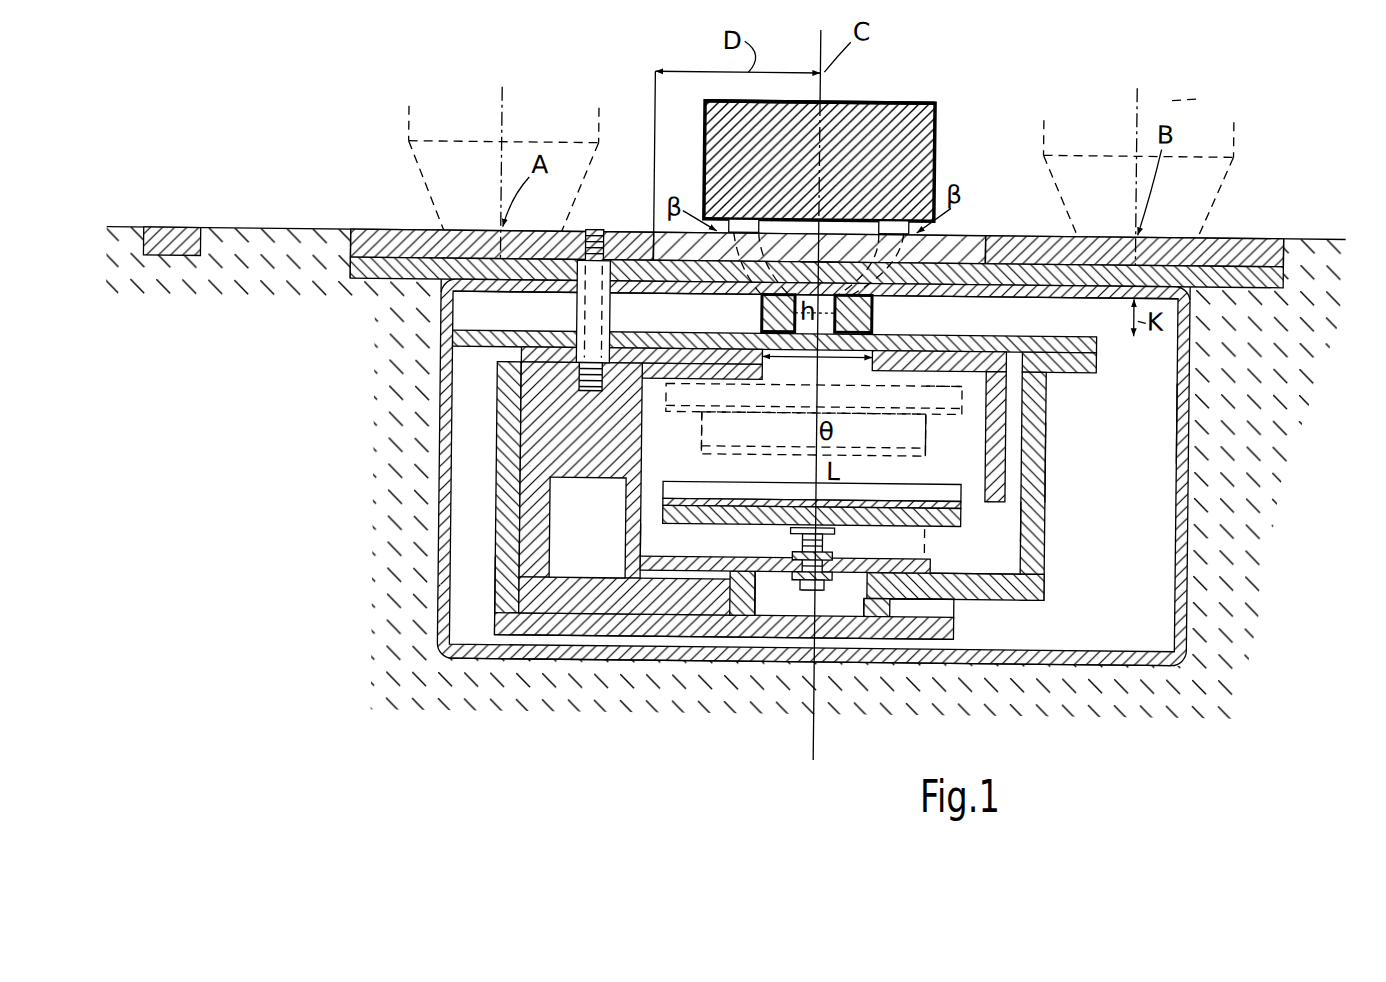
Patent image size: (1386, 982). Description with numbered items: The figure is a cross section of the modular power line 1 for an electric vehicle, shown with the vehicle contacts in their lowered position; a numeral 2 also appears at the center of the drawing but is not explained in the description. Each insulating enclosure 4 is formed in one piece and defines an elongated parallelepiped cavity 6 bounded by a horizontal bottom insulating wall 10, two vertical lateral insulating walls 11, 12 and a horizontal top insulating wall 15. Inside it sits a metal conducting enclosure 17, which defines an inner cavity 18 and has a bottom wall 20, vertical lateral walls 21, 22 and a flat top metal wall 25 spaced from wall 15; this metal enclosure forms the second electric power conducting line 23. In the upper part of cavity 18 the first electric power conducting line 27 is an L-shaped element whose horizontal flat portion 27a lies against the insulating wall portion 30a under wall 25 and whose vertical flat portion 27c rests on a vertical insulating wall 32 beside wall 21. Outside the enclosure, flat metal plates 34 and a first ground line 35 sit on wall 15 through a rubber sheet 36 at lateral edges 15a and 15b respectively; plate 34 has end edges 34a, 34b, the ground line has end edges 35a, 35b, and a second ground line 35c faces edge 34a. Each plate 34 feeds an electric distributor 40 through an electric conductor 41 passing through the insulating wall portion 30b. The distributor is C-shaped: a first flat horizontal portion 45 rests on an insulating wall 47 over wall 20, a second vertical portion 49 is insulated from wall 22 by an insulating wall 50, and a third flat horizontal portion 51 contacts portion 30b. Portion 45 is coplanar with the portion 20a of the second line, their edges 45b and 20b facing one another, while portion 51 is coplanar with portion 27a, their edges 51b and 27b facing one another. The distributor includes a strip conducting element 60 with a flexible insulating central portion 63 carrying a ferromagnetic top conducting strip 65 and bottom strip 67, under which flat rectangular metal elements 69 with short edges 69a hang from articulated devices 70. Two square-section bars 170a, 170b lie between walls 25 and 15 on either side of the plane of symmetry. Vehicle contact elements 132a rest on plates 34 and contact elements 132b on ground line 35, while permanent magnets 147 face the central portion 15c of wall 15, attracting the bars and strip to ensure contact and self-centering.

The modular power line 1 is at (933, 102).
The plate 2 is at (817, 311).
The insulating enclosure 4 is at (1112, 422).
The parallelepiped cavity 6 is at (442, 404).
The bottom insulating wall 10 is at (638, 660).
The lateral insulating wall 11 is at (1225, 463).
The lateral insulating wall 12 is at (495, 500).
The top insulating wall 15 is at (1080, 289).
The lateral edge of top wall 15a is at (440, 290).
The lateral edge of top wall 15b is at (1200, 335).
The central portion of top wall 15c is at (832, 292).
The metal conducting enclosure 17 is at (495, 592).
The cavity 18 is at (1050, 448).
The bottom wall 20 is at (914, 642).
The portion of second electric power line 20a is at (960, 572).
The edge 20b is at (880, 610).
The lateral wall 21 is at (1048, 540).
The lateral wall 22 is at (495, 496).
The second electric power conducting line 23 is at (976, 571).
The top metal wall 25 is at (672, 326).
The first electric power conducting line 27 is at (815, 401).
The first horizontal flat portion 27a is at (945, 420).
The edge 27b is at (930, 352).
The second vertical flat portion 27c is at (1010, 410).
The flat insulating wall portion 30a is at (962, 348).
The flat insulating wall portion 30b is at (652, 380).
The vertical insulating wall 32 is at (1050, 466).
The flat metal plate 34 is at (388, 234).
The first end edge 34a is at (326, 234).
The second end edge 34b is at (653, 238).
The first ground line 35 is at (1240, 234).
The first end edge 35a is at (1285, 255).
The second end edge 35b is at (982, 252).
The second ground line 35c is at (172, 233).
The rubber sheet 36 is at (352, 265).
The electric distributor 40 is at (752, 405).
The electric conductor 41 is at (577, 312).
The first flat horizontal portion 45 is at (702, 566).
The edge 45b is at (790, 576).
The insulating wall 47 is at (568, 606).
The second vertical portion 49 is at (614, 276).
The insulating wall 50 is at (528, 392).
The third flat horizontal portion 51 is at (815, 370).
The edge 51b is at (772, 380).
The strip conducting element 60 is at (714, 492).
The central portion 63 is at (742, 515).
The top conducting strip 65 is at (872, 385).
The bottom strip 67 is at (1047, 522).
The flat rectangular metal element 69 is at (758, 586).
The short edge 69a is at (626, 572).
The articulated device 70 is at (840, 551).
The electric contact element 132a is at (406, 142).
The electric contact element 132b is at (1225, 212).
The permanent magnet 147 is at (880, 152).
The square-section bar 170a is at (760, 318).
The square-section bar 170b is at (876, 292).